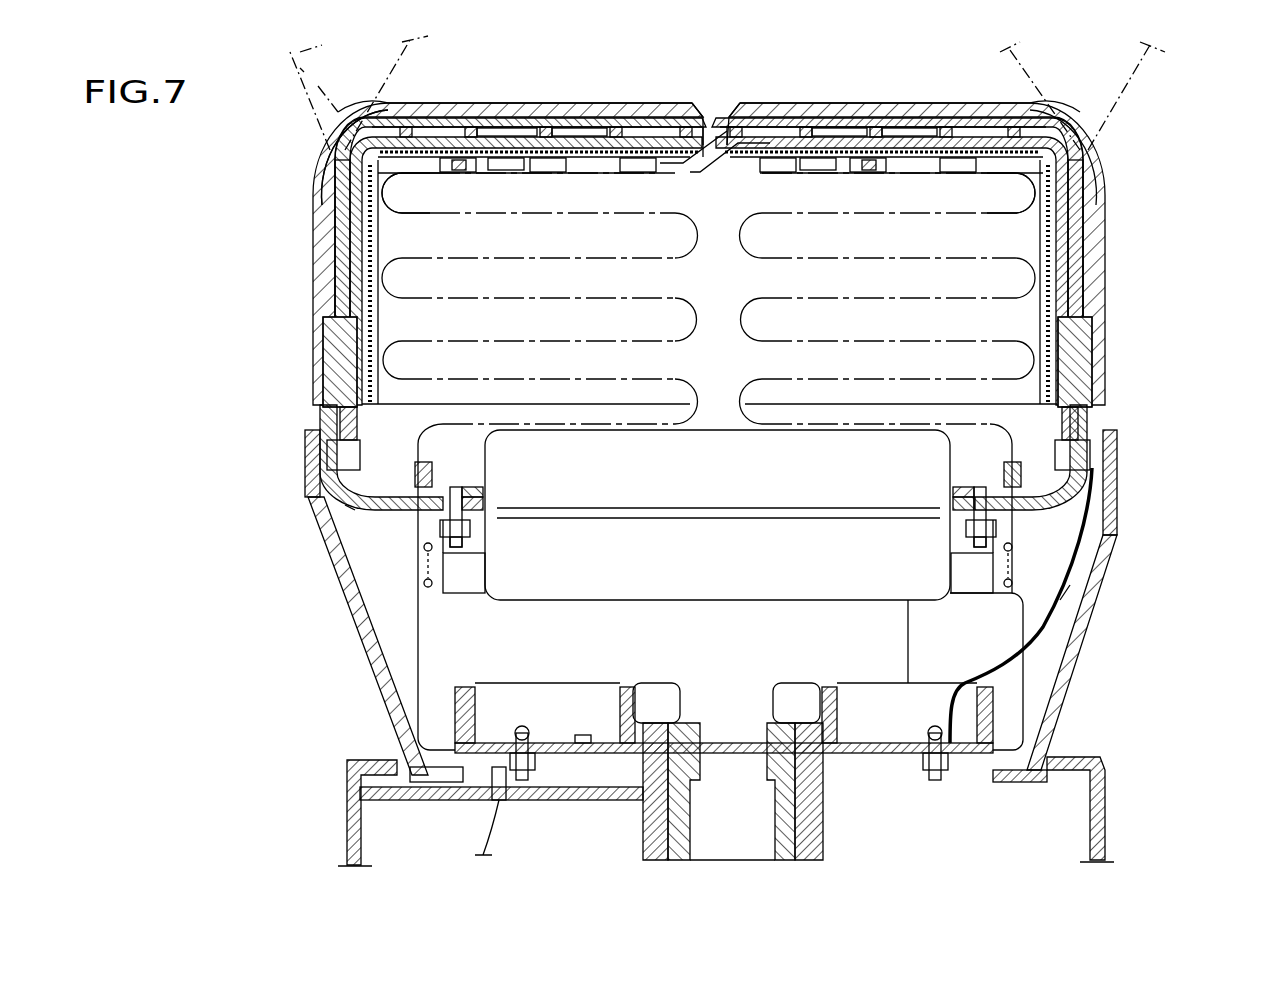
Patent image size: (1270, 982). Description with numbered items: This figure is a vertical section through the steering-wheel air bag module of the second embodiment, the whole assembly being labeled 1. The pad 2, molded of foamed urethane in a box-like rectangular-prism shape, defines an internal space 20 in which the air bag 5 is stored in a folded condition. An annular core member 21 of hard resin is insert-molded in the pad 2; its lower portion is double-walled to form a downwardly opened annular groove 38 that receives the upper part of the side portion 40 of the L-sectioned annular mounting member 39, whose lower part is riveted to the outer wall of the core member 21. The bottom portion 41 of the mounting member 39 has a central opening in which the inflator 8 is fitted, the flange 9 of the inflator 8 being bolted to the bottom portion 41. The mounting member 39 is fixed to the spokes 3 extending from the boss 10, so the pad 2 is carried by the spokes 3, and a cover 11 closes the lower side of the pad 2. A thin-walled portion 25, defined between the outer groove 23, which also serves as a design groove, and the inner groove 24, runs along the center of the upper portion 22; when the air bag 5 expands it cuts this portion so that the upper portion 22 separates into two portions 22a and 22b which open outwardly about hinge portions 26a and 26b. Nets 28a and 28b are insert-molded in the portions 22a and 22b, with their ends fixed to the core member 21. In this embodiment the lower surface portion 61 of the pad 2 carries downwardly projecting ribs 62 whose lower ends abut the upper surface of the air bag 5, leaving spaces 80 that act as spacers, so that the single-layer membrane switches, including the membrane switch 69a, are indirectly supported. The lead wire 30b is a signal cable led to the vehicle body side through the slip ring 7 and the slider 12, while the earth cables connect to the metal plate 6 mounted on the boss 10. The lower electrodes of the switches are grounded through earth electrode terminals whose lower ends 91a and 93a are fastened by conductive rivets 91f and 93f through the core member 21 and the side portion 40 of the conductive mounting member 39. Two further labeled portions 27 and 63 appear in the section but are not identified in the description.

The apparatus 1 is at (1219, 164).
The pad 2 is at (1106, 175).
The spokes 3 is at (1022, 657).
The air bag 5 is at (425, 213).
The metal plate 6 is at (606, 740).
The slip ring 7 is at (543, 768).
The inflator 8 is at (747, 602).
The flange 9 is at (445, 510).
The boss 10 is at (822, 830).
The cover 11 is at (372, 630).
The slider 12 is at (498, 810).
The space 20 is at (1031, 243).
The core member 21 is at (340, 258).
The upper portion 22 is at (792, 108).
The upper portion 22a is at (330, 103).
The upper portion 22b is at (935, 112).
The outer groove 23 is at (740, 105).
The inner groove 24 is at (720, 145).
The thin-walled portion 25 is at (705, 125).
The hinge portion 26a is at (340, 142).
The hinge portion 26b is at (1085, 125).
The insulating sheet 27 is at (560, 124).
The net 28a is at (409, 193).
The net 28b is at (1006, 193).
The lead wire 30b is at (1068, 578).
The annular groove 38 is at (330, 355).
The mounting member 39 is at (345, 500).
The side portion 40 is at (345, 425).
The bottom portion 41 is at (365, 510).
The lower surface portion 61 is at (1095, 260).
The ribs 62 is at (462, 170).
The corner portion 63 is at (338, 178).
The membrane switch 69a is at (497, 133).
The spaces 80 is at (555, 165).
The lower end 91a is at (1118, 480).
The conductive rivet 91f is at (1100, 452).
The lower end 93a is at (312, 470).
The conductive rivet 93f is at (345, 455).